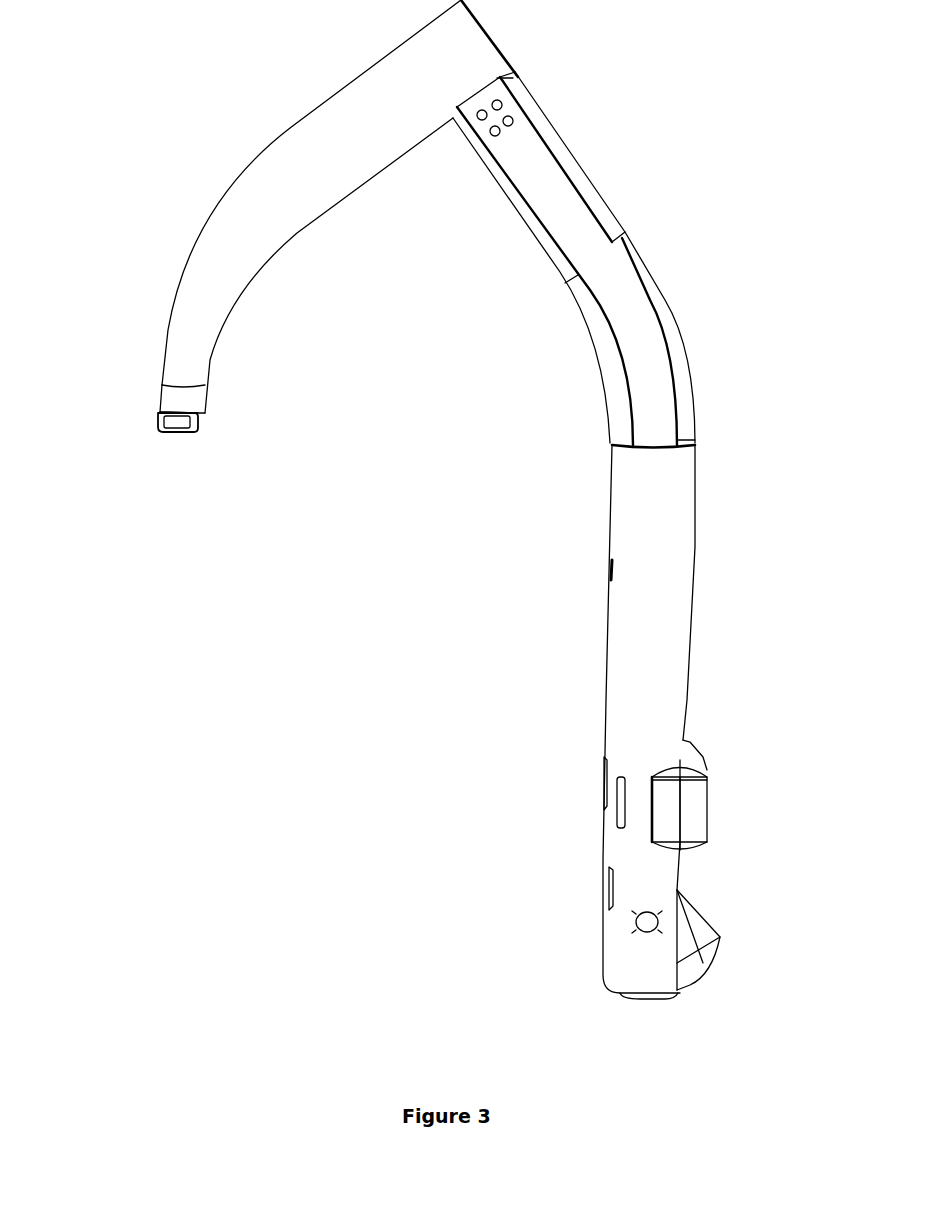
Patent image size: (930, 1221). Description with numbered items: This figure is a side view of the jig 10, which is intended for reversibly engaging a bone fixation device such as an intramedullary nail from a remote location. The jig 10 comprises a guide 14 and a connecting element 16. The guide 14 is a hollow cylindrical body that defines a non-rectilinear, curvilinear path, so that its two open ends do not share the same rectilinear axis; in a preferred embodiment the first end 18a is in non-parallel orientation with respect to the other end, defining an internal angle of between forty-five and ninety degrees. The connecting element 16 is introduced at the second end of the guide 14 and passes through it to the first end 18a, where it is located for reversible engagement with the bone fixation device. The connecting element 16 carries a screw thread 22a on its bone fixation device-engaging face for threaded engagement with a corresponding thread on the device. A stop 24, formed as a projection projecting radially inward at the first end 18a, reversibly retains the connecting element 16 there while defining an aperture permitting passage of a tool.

The jig 10 is at (629, 124).
The guide 14 is at (272, 170).
The connecting element 16 is at (162, 428).
The first end of the guide 18a is at (200, 420).
The screw thread 22a is at (180, 435).
The stop 24 is at (160, 398).